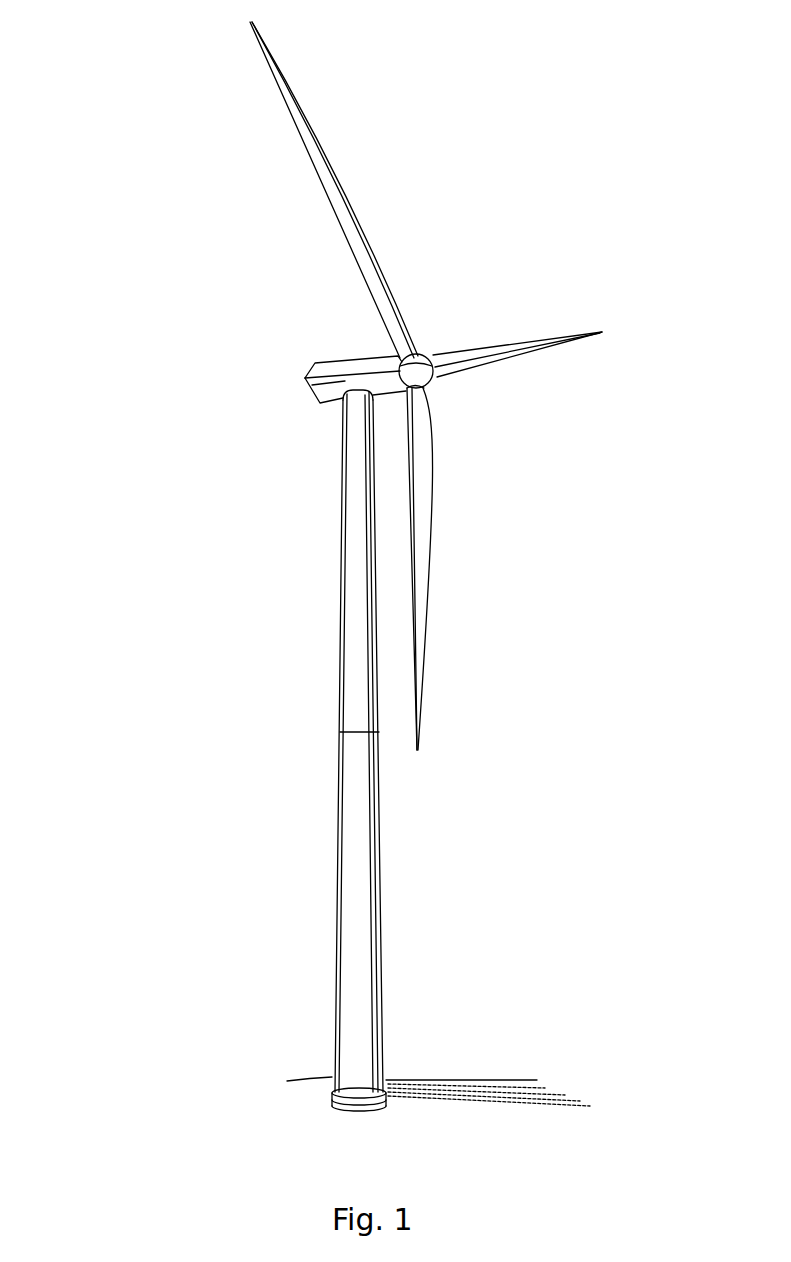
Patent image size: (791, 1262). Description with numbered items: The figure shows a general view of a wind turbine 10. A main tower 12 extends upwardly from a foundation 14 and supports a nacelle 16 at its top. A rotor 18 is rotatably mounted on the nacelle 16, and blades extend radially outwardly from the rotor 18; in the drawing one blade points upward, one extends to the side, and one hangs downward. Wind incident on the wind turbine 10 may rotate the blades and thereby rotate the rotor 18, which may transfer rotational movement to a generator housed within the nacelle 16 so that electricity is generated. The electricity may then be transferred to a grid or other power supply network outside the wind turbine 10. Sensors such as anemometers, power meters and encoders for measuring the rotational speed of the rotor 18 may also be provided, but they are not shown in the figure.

The wind turbine 10 is at (572, 143).
The main tower 12 is at (383, 983).
The foundation 14 is at (333, 1093).
The nacelle 16 is at (307, 378).
The rotor 18 is at (427, 348).